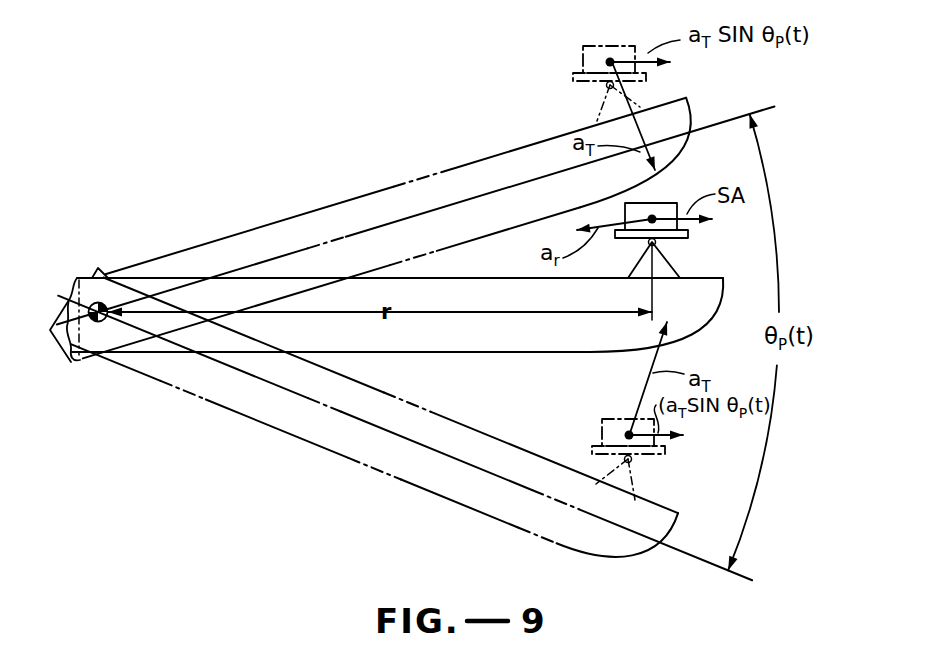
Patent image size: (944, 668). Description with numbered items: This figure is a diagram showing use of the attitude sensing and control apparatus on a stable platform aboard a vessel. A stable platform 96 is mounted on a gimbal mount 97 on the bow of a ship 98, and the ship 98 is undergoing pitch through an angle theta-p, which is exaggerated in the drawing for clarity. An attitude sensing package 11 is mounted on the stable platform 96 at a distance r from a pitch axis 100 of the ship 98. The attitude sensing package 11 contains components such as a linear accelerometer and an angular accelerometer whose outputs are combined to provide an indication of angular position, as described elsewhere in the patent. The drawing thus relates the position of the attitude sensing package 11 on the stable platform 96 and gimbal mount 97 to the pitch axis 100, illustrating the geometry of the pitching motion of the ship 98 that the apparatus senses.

The attitude sensing package 11 is at (653, 203).
The stable platform 96 is at (688, 233).
The gimbal mount 97 is at (672, 266).
The ship 98 is at (453, 278).
The pitch axis 100 is at (103, 321).